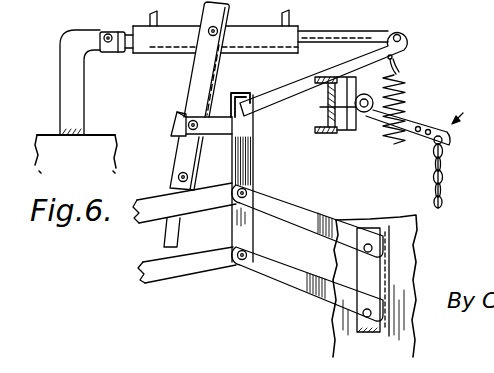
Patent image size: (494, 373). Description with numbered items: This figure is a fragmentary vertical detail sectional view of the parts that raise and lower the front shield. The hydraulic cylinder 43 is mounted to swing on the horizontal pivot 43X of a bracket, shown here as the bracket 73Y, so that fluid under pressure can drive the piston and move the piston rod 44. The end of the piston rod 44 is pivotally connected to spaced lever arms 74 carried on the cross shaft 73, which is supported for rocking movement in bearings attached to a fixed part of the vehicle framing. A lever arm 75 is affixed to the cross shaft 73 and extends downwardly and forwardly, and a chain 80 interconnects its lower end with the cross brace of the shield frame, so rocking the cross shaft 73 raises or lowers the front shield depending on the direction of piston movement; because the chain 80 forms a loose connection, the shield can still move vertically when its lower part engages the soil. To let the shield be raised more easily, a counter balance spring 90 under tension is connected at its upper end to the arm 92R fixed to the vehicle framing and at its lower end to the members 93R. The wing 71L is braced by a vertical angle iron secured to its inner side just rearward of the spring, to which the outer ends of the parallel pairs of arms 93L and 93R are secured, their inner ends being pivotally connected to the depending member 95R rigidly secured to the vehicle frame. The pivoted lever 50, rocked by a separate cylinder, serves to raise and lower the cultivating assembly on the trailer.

The pipe post 73Y is at (60, 58).
The horizontal pivot 43X is at (122, 14).
The hydraulic cylinder 43 is at (215, 45).
The piston rod 44 is at (352, 31).
The lever arms 74 is at (405, 45).
The arm 92R is at (275, 95).
The cross shaft 73 is at (335, 105).
The counter balance spring 90 is at (403, 90).
The pivoted lever 50 is at (463, 109).
The lever arm 75 is at (450, 140).
The chain 80 is at (443, 170).
The depending member 95R is at (251, 177).
The parallel pair of arms 93R is at (273, 216).
The parallel pair of arms 93L is at (262, 252).
The wing 71L is at (383, 247).